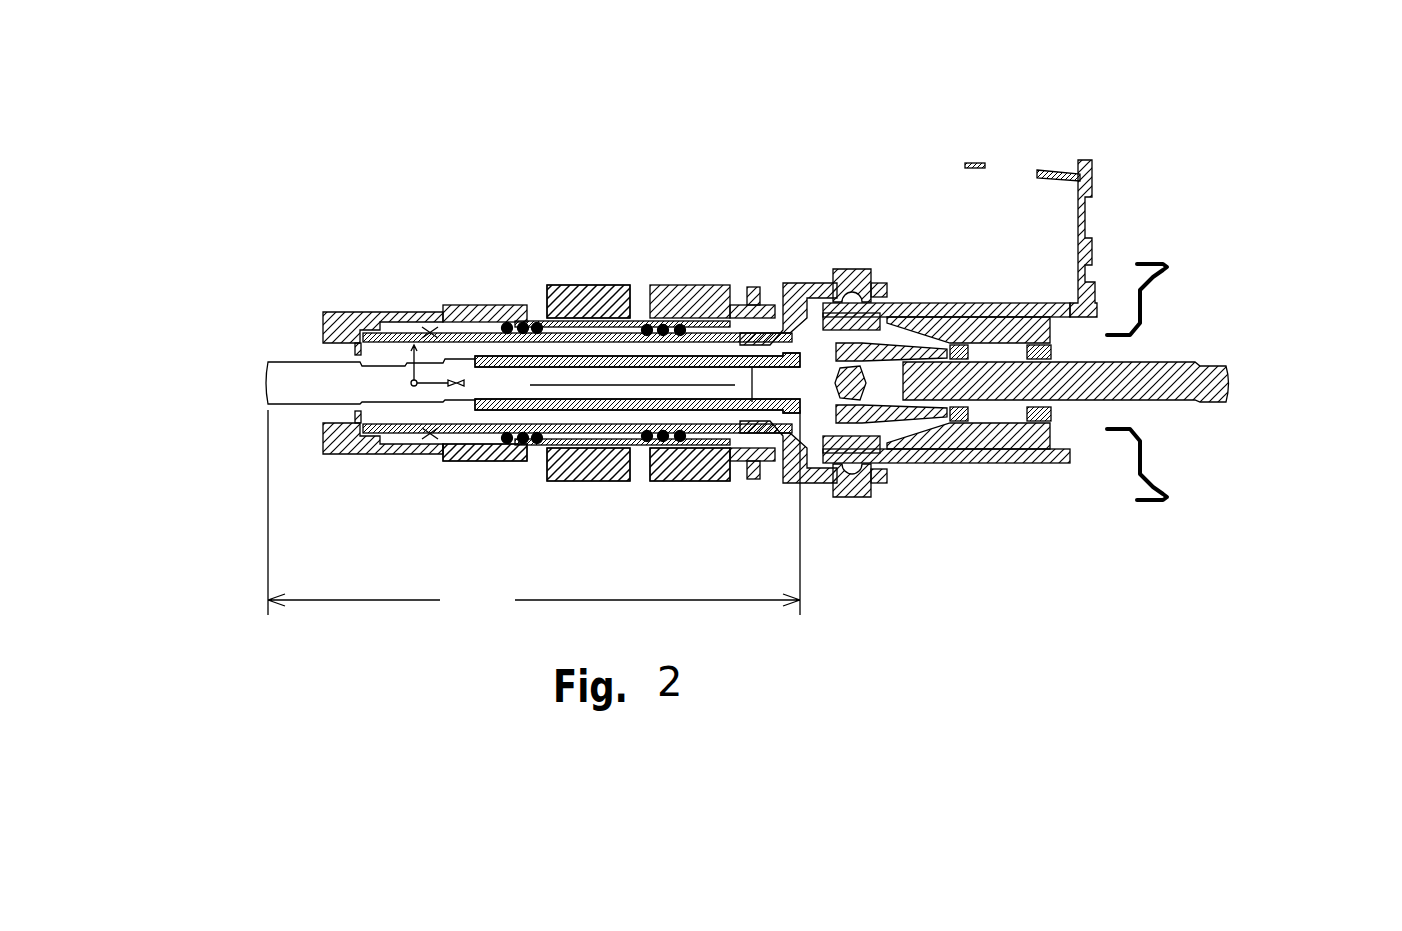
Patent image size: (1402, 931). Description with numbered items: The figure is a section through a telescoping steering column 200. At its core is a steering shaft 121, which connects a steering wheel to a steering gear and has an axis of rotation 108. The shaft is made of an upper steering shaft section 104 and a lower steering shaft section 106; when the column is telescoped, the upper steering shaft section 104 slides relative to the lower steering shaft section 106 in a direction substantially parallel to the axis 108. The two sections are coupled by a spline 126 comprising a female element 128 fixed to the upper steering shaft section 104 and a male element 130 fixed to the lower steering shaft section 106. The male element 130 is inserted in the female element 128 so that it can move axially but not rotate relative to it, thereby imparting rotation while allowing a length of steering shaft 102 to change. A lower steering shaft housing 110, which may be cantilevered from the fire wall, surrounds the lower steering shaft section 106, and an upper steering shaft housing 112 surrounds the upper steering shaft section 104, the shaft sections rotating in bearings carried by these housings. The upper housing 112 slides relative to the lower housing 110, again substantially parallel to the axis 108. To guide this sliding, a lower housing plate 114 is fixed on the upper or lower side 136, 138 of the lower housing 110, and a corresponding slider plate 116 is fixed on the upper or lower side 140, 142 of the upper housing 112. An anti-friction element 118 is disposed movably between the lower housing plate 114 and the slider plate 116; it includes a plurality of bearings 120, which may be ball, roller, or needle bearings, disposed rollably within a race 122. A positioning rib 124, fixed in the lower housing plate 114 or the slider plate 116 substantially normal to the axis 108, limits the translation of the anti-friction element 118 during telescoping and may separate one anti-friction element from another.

The telescoping steering column 200 is at (740, 329).
The lower steering shaft housing 110 is at (338, 312).
The upper steering shaft housing 112 is at (407, 333).
The upper side of upper housing 140 is at (578, 297).
The slider plate 116 is at (428, 330).
The race 122 is at (512, 306).
The anti-friction element 118 is at (562, 300).
The bearings 120 is at (627, 319).
The positioning rib 124 is at (632, 290).
The upper side of lower housing 136 is at (703, 283).
The lower housing plate 114 is at (773, 300).
The lower steering shaft section 106 is at (246, 397).
The steering shaft 121 is at (641, 384).
The upper steering shaft section 104 is at (810, 358).
The male element 130 is at (466, 397).
The spline 126 is at (487, 407).
The female element 128 is at (637, 383).
The lower side of upper housing 142 is at (595, 455).
The lower side of lower housing 138 is at (707, 455).
The length of steering shaft 102 is at (534, 514).
The axis of rotation 108 is at (1232, 382).